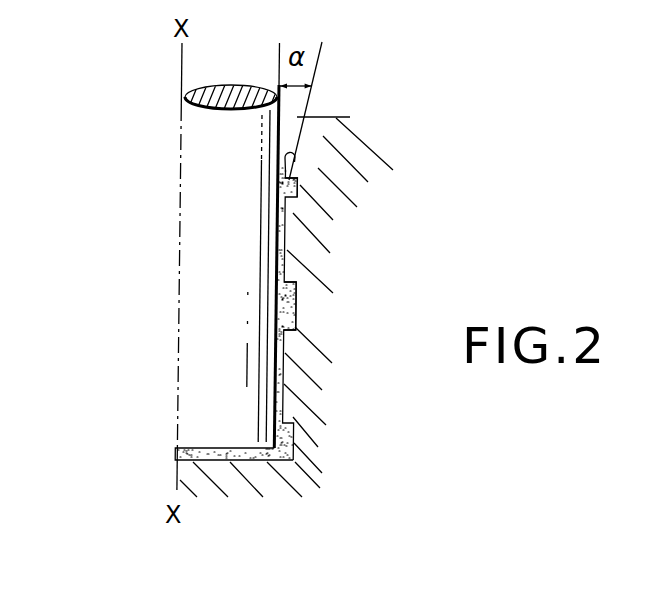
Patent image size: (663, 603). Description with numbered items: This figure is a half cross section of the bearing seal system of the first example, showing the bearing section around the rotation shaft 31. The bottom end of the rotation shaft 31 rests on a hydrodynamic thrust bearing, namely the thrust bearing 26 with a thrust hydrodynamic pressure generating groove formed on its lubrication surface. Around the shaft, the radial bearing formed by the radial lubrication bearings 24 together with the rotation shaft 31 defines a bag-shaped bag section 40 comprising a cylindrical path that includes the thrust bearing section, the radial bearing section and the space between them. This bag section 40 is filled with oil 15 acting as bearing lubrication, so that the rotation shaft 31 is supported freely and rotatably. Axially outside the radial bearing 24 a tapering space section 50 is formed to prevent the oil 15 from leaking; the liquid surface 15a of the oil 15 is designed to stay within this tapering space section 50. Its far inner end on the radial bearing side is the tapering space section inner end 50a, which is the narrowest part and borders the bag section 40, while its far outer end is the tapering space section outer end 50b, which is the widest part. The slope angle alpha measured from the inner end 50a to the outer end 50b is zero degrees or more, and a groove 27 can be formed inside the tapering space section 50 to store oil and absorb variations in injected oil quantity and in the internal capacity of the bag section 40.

The oil 15 is at (276, 310).
The liquid surface 15a is at (296, 152).
The radial lubrication bearing 24 is at (299, 229).
The thrust bearing 26 is at (215, 453).
The groove 27 is at (276, 244).
The rotation shaft 31 is at (212, 220).
The bag section 40 is at (296, 308).
The tapering space section 50 is at (306, 126).
The tapering space section inner end 50a is at (285, 176).
The tapering space section outer end 50b is at (300, 118).